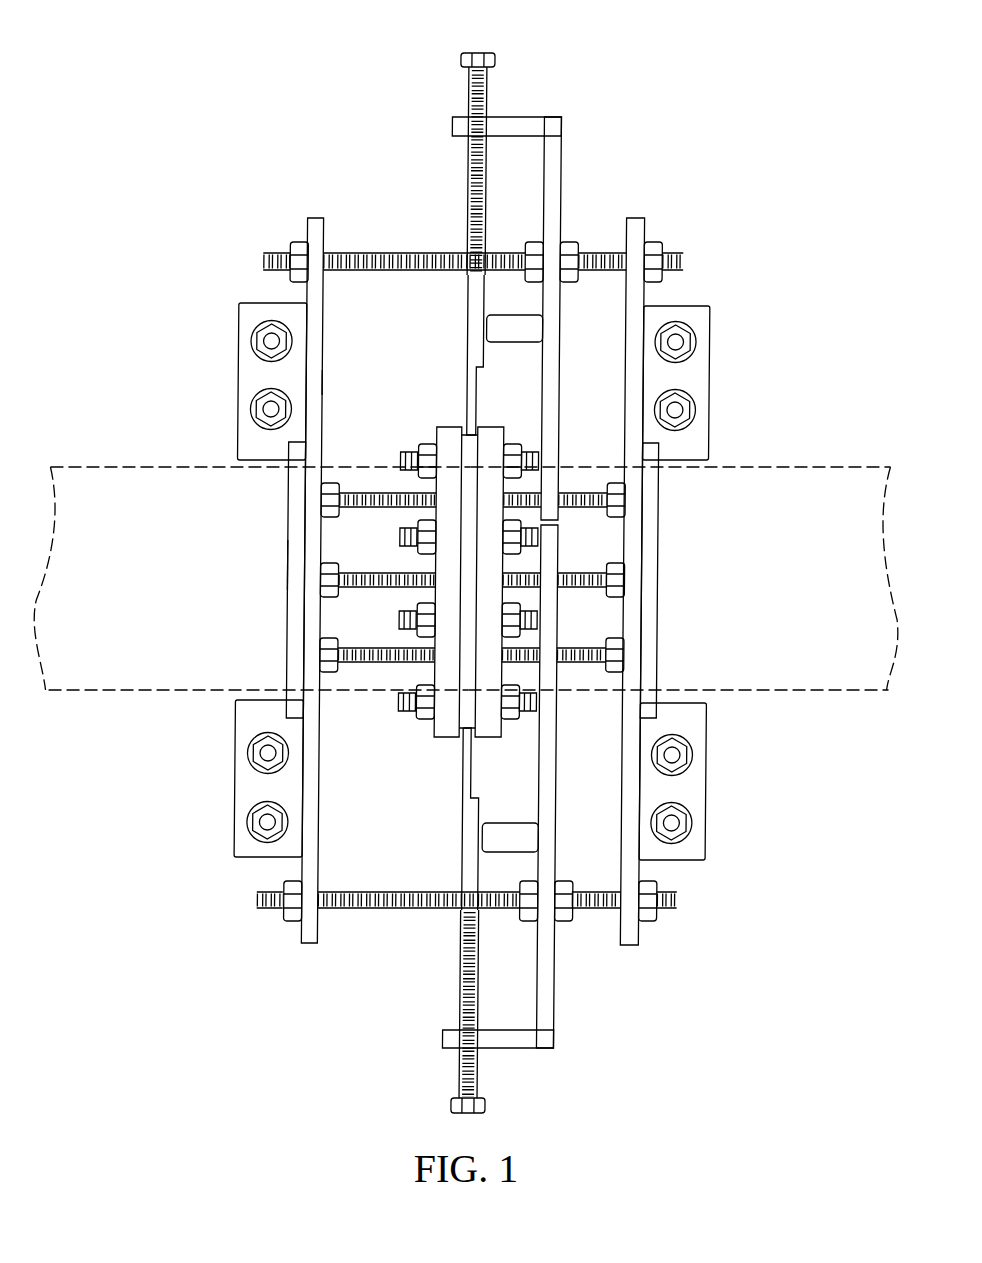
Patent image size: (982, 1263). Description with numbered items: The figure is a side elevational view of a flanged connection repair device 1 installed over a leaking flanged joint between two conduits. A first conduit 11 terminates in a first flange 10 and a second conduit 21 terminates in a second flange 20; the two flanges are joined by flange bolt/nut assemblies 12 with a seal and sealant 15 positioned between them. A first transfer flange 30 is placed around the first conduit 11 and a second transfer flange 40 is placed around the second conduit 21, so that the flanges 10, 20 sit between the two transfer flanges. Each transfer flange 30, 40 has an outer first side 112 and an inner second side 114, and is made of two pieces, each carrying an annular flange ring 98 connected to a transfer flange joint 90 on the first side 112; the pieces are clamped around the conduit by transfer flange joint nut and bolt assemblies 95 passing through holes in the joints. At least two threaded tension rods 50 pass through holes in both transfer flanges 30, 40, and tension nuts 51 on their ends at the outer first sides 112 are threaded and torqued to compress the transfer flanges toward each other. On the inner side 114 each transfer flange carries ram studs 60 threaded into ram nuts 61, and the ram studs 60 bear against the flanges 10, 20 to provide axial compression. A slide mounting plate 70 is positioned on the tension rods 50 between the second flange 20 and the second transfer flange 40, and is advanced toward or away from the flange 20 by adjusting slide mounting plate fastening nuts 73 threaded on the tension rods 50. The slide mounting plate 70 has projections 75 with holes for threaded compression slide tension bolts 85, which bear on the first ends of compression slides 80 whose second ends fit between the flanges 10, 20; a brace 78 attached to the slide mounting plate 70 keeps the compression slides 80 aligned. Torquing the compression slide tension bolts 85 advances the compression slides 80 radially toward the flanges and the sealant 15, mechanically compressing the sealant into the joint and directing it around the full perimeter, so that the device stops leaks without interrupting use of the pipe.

The flanged connection repair device 1 is at (584, 82).
The first flange 10 is at (440, 579).
The first conduit 11 is at (97, 487).
The flange bolt/nut assemblies 12 is at (433, 432).
The seal and sealant 15 is at (468, 463).
The second flange 20 is at (499, 725).
The second conduit 21 is at (820, 480).
The first transfer flange 30 is at (313, 315).
The second transfer flange 40 is at (634, 225).
The threaded tension rods 50 is at (395, 262).
The tension nuts 51 is at (656, 250).
The ram studs 60 is at (376, 492).
The ram nuts 61 is at (331, 483).
The slide mounting plate 70 is at (559, 142).
The slide mounting plate fastening nuts 73 is at (535, 245).
The projections 75 is at (517, 125).
The brace 78 is at (518, 336).
The compression slides 80 is at (473, 303).
The compression slide tension bolts 85 is at (455, 63).
The transfer flange joint 90 is at (244, 372).
The transfer flange joint nut and bolt assembly 95 is at (256, 333).
The annular flange ring 98 is at (294, 628).
The first side 112 is at (289, 562).
The second side 114 is at (322, 382).